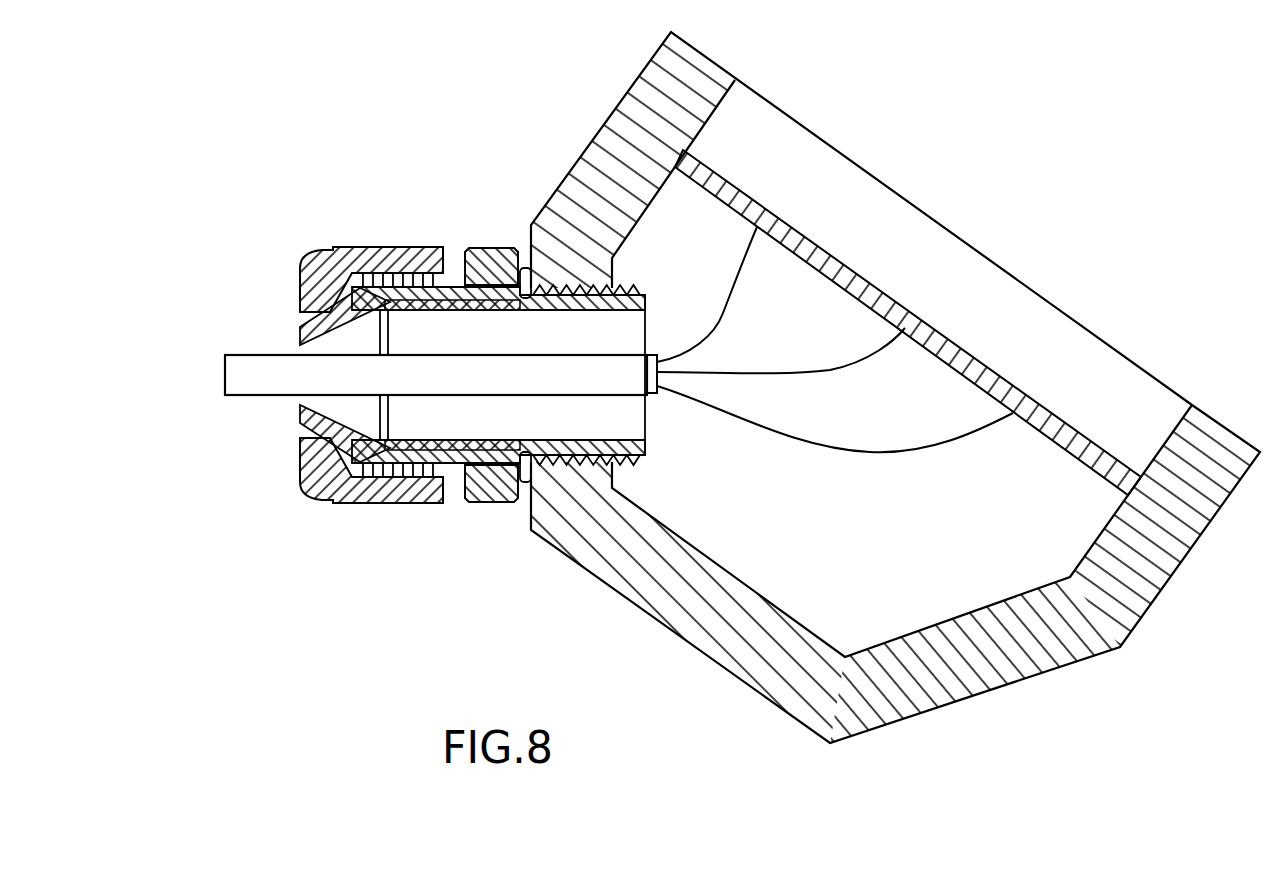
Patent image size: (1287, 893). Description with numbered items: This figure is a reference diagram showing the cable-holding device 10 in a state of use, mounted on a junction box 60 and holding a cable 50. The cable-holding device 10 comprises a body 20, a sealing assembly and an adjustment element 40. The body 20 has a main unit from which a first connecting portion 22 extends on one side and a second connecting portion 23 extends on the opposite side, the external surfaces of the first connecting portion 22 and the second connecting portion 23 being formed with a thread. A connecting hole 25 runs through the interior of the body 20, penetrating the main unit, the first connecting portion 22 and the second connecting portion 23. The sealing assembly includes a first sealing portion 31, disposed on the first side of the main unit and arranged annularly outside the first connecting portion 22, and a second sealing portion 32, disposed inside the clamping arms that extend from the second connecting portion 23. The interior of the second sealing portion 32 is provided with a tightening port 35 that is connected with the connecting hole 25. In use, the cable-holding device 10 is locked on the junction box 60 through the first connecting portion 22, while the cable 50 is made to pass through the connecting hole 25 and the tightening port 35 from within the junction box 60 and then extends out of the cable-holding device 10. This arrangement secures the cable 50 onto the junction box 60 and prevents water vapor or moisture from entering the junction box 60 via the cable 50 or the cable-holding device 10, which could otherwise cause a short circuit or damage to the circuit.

The cable-holding device 10 is at (286, 296).
The body 20 is at (491, 247).
The first connecting portion 22 is at (568, 300).
The second connecting portion 23 is at (371, 269).
The connecting hole 25 is at (447, 412).
The first sealing portion 31 is at (525, 458).
The second sealing portion 32 is at (335, 297).
The tightening port 35 is at (300, 350).
The adjustment element 40 is at (410, 286).
The cable 50 is at (230, 373).
The junction box 60 is at (627, 121).